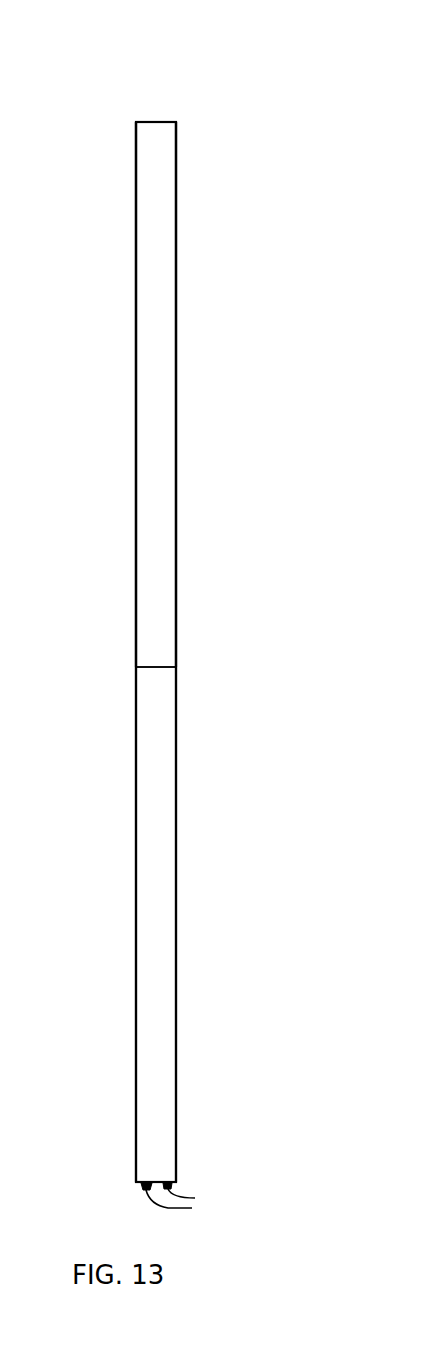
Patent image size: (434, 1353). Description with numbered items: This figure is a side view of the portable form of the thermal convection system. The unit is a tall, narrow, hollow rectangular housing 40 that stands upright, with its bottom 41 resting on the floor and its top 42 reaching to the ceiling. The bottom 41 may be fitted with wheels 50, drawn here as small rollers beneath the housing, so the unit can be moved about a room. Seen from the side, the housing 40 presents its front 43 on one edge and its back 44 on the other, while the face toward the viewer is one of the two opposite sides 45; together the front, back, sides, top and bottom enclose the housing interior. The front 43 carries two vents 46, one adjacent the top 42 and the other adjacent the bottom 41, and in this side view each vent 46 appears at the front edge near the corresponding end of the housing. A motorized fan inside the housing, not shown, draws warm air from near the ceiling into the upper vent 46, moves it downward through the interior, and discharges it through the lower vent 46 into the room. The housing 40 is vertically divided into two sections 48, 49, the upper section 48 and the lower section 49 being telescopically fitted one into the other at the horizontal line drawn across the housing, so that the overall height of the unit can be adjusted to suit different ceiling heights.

The housing 40 is at (204, 70).
The top 42 is at (146, 120).
The vents 46 is at (180, 160).
The section 48 is at (136, 396).
The front 43 is at (178, 494).
The back 44 is at (135, 520).
The sides 45 is at (158, 690).
The section 49 is at (139, 815).
The bottom 41 is at (134, 1186).
The wheels 50 is at (189, 1199).